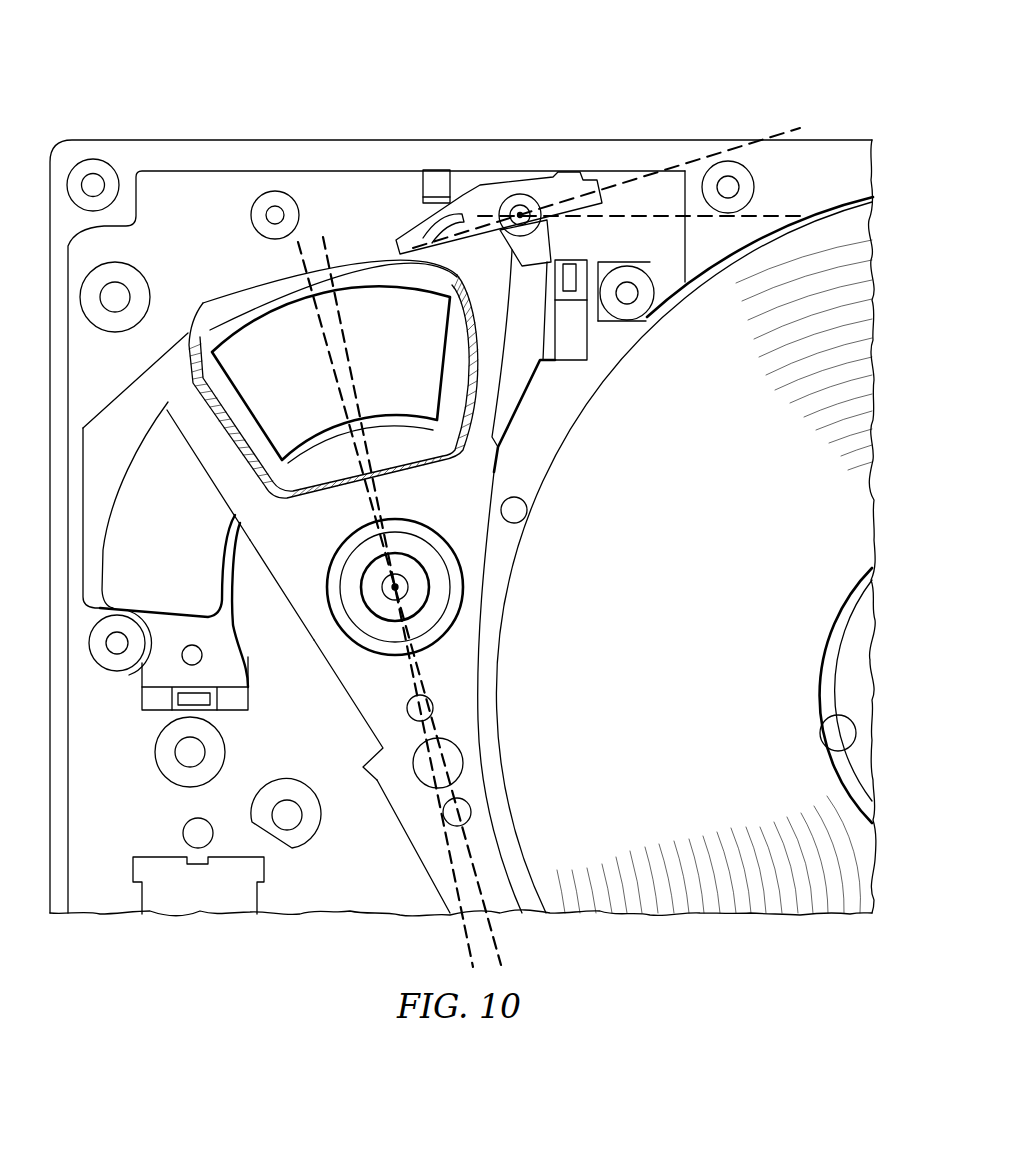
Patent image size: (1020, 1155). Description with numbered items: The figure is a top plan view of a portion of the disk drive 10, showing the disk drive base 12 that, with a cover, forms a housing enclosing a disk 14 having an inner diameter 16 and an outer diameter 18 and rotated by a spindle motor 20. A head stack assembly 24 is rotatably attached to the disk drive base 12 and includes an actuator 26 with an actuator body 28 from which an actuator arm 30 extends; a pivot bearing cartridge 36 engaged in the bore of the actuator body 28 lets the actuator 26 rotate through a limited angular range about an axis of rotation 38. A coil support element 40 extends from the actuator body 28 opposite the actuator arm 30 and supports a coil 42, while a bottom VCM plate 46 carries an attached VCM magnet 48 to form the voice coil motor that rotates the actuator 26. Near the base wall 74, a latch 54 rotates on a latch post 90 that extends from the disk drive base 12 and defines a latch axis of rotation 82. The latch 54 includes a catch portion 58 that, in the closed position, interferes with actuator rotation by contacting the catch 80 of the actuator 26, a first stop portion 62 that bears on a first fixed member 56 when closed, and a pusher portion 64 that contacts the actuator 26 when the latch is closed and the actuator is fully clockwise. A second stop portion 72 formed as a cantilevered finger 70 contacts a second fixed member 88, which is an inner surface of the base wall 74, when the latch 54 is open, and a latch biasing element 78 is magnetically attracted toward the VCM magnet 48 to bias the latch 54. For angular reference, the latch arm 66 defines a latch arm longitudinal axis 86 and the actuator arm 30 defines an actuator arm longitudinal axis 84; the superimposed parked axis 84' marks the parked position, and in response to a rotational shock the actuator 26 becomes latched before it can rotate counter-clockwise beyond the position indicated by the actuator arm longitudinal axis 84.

The disk drive 10 is at (284, 57).
The disk drive base 12 is at (205, 140).
The disk 14 is at (662, 616).
The inner diameter 16 is at (830, 758).
The outer diameter 18 is at (530, 508).
The spindle motor 20 is at (827, 653).
The head stack assembly 24 is at (295, 585).
The actuator 26 is at (317, 627).
The actuator body 28 is at (337, 677).
The actuator arm 30 is at (413, 812).
The pivot bearing cartridge 36 is at (430, 585).
The axis of rotation 38 is at (397, 578).
The coil support element 40 is at (180, 407).
The coil 42 is at (223, 317).
The bottom VCM plate 46 is at (503, 413).
The VCM magnet 48 is at (149, 542).
The latch 54 is at (478, 190).
The first fixed member 56 is at (578, 171).
The catch portion 58 is at (395, 248).
The first stop portion 62 is at (566, 172).
The pusher portion 64 is at (551, 244).
The latch arm 66 is at (457, 191).
The cantilevered finger 70 is at (432, 250).
The second stop portion 72 is at (432, 230).
The disk drive base wall 74 is at (667, 150).
The latch biasing element 78 is at (552, 360).
The catch 80 is at (446, 318).
The latch axis of rotation 82 is at (525, 194).
The actuator arm longitudinal axis 84 is at (430, 603).
The parked actuator arm longitudinal axis 84' is at (398, 602).
The latch arm longitudinal axis 86 is at (800, 130).
The second fixed member 88 is at (413, 170).
The latch post 90 is at (508, 196).